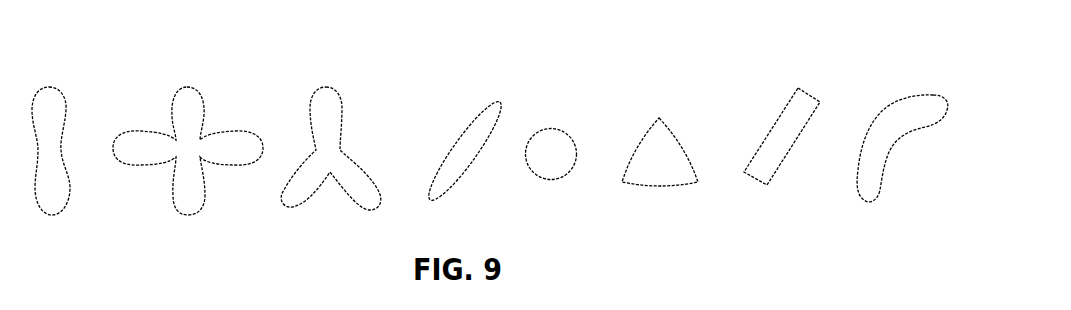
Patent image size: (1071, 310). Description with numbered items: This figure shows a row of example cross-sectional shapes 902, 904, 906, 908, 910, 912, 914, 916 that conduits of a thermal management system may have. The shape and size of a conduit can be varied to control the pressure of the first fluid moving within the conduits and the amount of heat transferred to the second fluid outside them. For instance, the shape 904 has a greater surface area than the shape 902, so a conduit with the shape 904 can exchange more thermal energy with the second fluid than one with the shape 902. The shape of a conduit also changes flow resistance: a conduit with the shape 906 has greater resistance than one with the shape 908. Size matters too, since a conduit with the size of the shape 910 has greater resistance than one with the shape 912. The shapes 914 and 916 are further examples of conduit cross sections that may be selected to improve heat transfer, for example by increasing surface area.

The cross-sectional shape 902 is at (54, 64).
The cross-sectional shape 904 is at (191, 61).
The cross-sectional shape 906 is at (335, 61).
The cross-sectional shape 908 is at (469, 89).
The cross-sectional shape 910 is at (554, 106).
The cross-sectional shape 912 is at (664, 91).
The cross-sectional shape 914 is at (786, 68).
The cross-sectional shape 916 is at (904, 74).